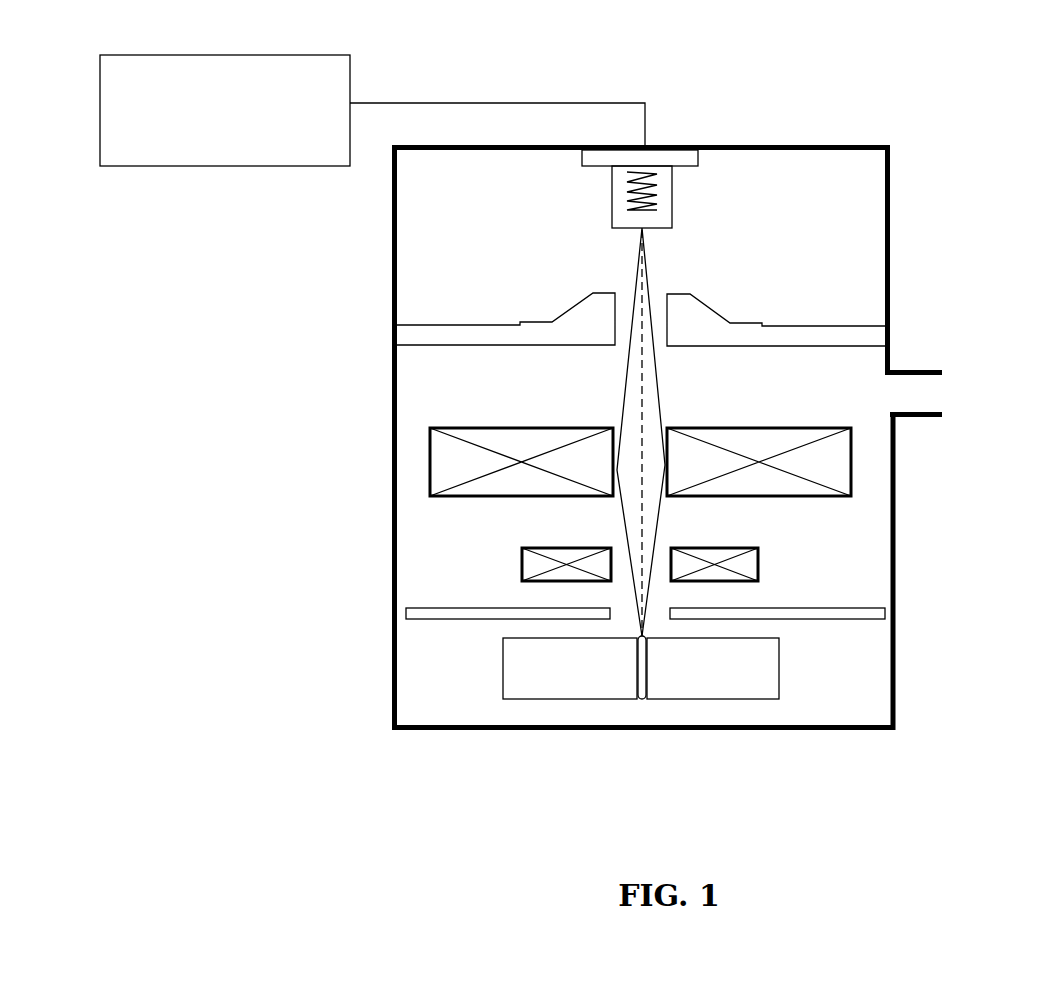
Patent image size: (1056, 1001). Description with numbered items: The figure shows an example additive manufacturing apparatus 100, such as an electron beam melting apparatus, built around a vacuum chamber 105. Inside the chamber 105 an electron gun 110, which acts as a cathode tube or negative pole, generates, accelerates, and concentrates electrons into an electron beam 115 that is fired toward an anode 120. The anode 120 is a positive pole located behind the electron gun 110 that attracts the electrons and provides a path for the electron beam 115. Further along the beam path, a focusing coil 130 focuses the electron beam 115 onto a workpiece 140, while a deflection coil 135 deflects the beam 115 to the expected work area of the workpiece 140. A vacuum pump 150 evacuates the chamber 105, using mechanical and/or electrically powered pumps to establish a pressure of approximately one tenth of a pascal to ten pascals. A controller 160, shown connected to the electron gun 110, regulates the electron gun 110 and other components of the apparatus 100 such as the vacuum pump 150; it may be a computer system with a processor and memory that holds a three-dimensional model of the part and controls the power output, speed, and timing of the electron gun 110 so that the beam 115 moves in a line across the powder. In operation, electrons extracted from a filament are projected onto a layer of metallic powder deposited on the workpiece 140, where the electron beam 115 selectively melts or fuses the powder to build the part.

The additive manufacturing apparatus 100 is at (939, 208).
The vacuum chamber 105 is at (394, 228).
The electron gun 110 is at (612, 192).
The electron beam 115 is at (625, 388).
The anode 120 is at (592, 303).
The focusing coil 130 is at (851, 487).
The deflection coil 135 is at (758, 564).
The workpiece 140 is at (779, 667).
The vacuum pump 150 is at (923, 391).
The controller 160 is at (198, 124).